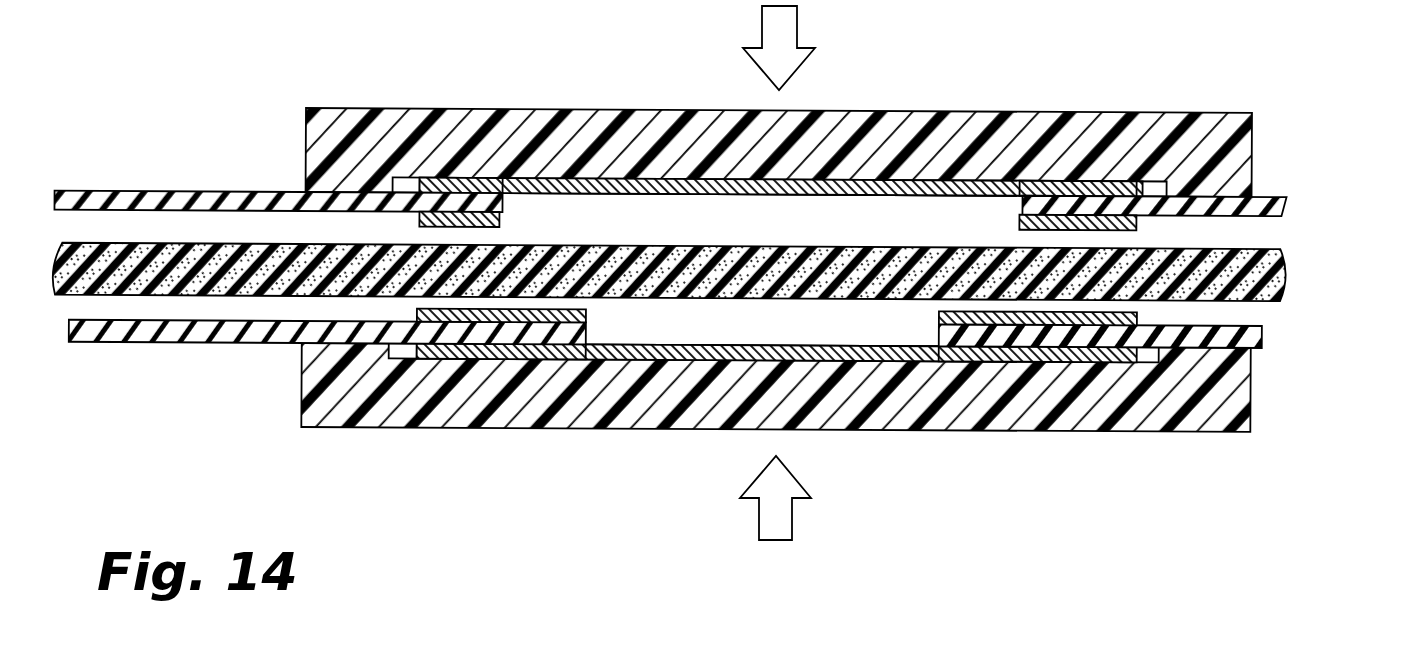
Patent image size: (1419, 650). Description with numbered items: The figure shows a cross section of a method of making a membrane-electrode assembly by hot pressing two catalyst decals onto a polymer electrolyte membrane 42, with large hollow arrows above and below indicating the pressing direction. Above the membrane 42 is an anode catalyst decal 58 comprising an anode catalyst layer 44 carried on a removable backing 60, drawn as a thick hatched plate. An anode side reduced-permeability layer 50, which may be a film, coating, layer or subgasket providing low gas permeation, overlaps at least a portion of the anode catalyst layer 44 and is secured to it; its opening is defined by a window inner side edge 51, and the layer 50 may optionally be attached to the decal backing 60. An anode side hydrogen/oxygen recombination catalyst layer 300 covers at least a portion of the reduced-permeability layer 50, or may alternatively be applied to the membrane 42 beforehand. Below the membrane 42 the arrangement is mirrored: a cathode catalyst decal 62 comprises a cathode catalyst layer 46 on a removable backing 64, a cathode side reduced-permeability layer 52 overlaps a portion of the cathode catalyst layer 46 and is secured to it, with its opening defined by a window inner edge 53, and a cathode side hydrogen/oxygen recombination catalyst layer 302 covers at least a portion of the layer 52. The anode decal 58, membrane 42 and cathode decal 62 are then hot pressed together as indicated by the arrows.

The polymer electrolyte membrane 42 is at (1287, 274).
The anode catalyst layer 44 is at (1156, 184).
The cathode catalyst layer 46 is at (1140, 360).
The anode side reduced-permeability layer 50 is at (201, 188).
The window inner side edge 51 is at (521, 178).
The cathode side reduced-permeability layer 52 is at (178, 343).
The window inner edge 53 is at (590, 333).
The anode catalyst decal 58 is at (926, 96).
The removable backing 60 is at (837, 110).
The cathode catalyst decal 62 is at (963, 440).
The removable backing 64 is at (1112, 431).
The anode side hydrogen/oxygen recombination catalyst layer 300 is at (438, 227).
The cathode side hydrogen/oxygen recombination catalyst layer 302 is at (433, 308).